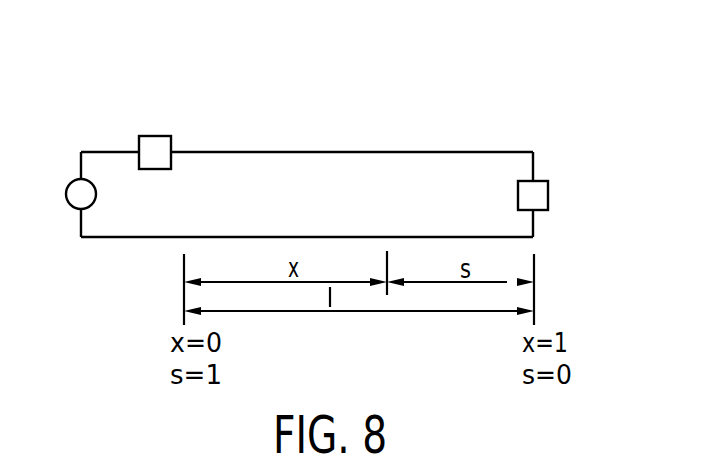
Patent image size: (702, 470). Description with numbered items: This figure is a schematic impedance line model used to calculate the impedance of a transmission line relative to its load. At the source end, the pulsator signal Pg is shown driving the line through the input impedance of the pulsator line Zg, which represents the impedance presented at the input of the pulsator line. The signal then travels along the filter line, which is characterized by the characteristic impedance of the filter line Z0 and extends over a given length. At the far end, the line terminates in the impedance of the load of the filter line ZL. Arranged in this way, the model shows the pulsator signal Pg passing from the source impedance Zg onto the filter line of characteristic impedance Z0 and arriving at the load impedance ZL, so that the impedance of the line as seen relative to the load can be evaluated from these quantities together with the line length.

The input impedance of the pulsator line Zg is at (155, 130).
The pulsator signal Pg is at (65, 184).
The characteristic impedance of the filter line Z0 is at (307, 175).
The impedance of the load of the filter line ZL is at (553, 187).